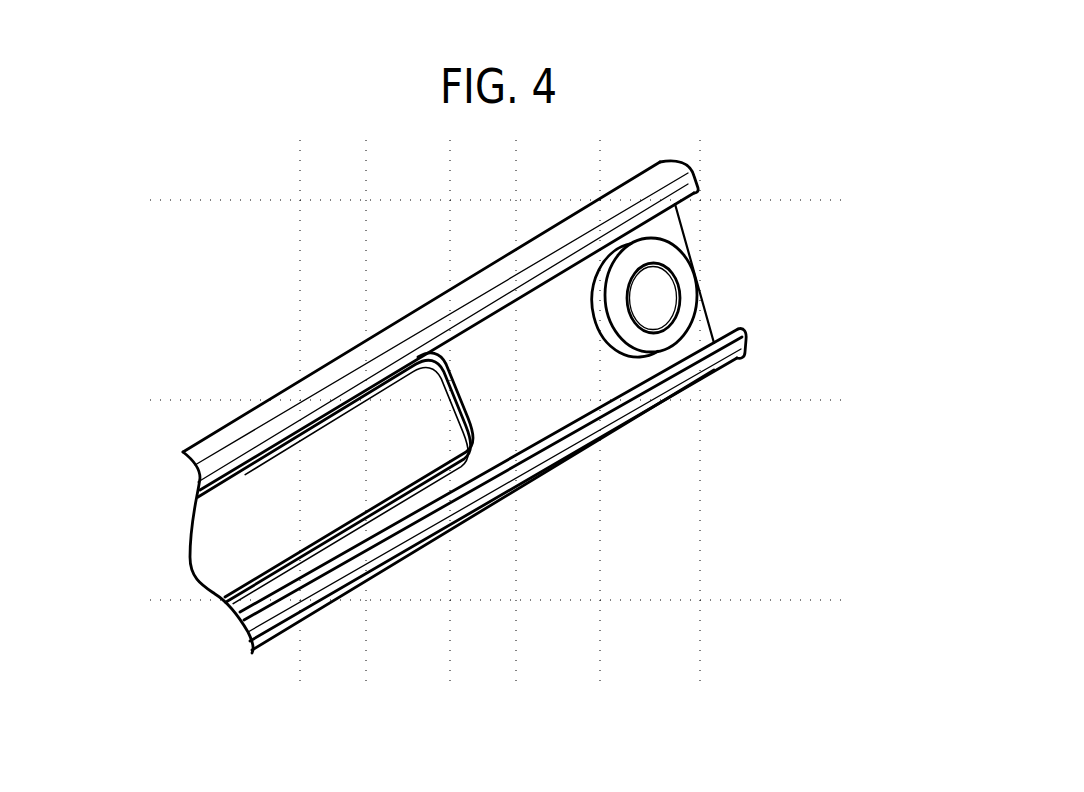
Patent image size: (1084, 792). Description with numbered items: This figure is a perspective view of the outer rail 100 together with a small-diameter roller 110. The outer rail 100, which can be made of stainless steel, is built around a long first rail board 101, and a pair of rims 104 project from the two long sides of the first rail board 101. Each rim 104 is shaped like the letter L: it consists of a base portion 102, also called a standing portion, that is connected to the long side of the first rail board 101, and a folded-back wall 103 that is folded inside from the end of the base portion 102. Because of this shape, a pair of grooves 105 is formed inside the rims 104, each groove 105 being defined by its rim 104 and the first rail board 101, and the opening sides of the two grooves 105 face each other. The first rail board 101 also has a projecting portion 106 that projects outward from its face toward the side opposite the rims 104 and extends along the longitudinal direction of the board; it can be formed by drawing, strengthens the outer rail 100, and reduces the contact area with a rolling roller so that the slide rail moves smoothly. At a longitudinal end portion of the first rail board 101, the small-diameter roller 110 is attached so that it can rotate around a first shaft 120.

The outer rail 100 is at (436, 257).
The first rail board 101 is at (512, 445).
The base portion 102 is at (668, 158).
The folded-back wall 103 is at (697, 184).
The rim 104 is at (753, 132).
The groove 105 is at (673, 211).
The projecting portion 106 is at (378, 480).
The small-diameter roller 110 is at (622, 311).
The first shaft 120 is at (662, 294).